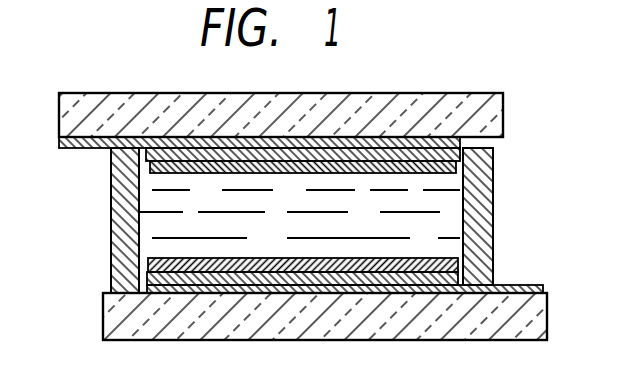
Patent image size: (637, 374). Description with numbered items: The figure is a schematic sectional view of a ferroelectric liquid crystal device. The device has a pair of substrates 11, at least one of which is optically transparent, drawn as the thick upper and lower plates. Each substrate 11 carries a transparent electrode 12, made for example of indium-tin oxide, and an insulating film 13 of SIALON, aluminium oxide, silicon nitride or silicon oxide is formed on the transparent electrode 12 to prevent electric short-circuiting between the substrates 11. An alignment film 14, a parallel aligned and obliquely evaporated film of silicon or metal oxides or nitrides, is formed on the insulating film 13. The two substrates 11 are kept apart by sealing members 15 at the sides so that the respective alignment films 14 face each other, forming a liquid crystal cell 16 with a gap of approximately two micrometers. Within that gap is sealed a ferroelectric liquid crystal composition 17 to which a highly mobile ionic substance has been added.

The substrate 11 is at (504, 108).
The transparent electrode 12 is at (517, 284).
The insulating film 13 is at (467, 277).
The alignment film 14 is at (152, 167).
The sealing member 15 is at (111, 222).
The liquid crystal cell 16 is at (507, 82).
The ferroelectric liquid crystal composition 17 is at (147, 243).